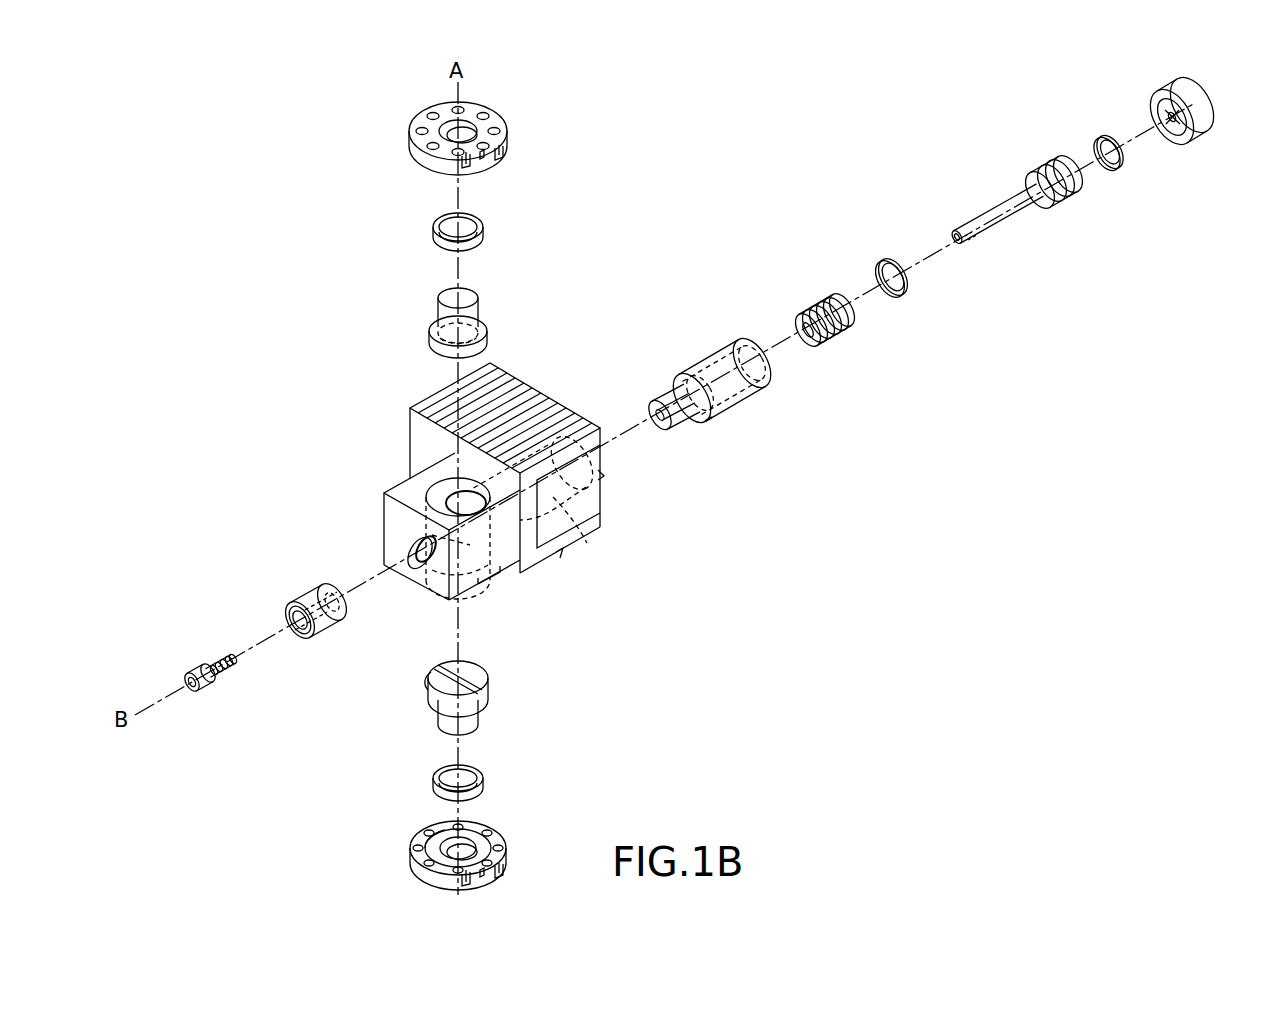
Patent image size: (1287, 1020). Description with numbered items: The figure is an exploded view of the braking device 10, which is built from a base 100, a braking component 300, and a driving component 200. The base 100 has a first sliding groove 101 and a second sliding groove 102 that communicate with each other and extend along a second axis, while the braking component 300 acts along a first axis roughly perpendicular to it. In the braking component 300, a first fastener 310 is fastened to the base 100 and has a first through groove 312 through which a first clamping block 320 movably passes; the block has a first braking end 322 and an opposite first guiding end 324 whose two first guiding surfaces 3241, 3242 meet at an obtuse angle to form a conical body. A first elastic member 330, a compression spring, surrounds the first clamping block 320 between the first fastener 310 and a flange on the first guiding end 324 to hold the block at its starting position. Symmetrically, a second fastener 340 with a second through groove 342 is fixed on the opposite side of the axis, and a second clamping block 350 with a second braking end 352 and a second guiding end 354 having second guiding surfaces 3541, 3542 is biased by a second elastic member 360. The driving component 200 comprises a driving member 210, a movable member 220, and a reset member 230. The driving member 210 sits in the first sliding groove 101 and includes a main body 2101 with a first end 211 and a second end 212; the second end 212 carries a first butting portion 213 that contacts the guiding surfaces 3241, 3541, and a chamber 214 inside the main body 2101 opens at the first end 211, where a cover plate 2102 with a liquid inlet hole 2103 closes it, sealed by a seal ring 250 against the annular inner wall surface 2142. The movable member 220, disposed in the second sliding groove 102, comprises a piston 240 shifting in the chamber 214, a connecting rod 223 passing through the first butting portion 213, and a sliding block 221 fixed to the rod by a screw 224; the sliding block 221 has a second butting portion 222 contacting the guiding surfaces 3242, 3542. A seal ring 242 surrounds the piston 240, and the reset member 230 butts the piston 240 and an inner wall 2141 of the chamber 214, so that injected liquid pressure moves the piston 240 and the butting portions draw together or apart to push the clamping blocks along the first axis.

The braking device 10 is at (356, 440).
The base 100 is at (560, 572).
The first sliding groove 101 is at (570, 530).
The second sliding groove 102 is at (415, 575).
The driving component 200 is at (888, 360).
The driving member 210 is at (727, 433).
The first end 211 is at (715, 340).
The second end 212 is at (660, 385).
The first butting portion 213 is at (680, 430).
The chamber 214 is at (760, 360).
The main body 2101 is at (715, 415).
The inner wall 2141 is at (735, 405).
The annular inner wall surface 2142 is at (700, 350).
The movable member 220 is at (332, 640).
The sliding block 221 is at (300, 598).
The second butting portion 222 is at (312, 597).
The connecting rod 223 is at (997, 223).
The screw 224 is at (188, 677).
The reset member 230 is at (835, 335).
The piston 240 is at (1070, 195).
The seal ring 242 is at (900, 293).
The seal ring 250 is at (1128, 165).
The cover plate 2102 is at (1207, 122).
The liquid inlet hole 2103 is at (1200, 100).
The braking component 300 is at (366, 127).
The first fastener 310 is at (508, 133).
The first through groove 312 is at (470, 128).
The first clamping block 320 is at (478, 306).
The first braking end 322 is at (438, 294).
The first guiding end 324 is at (482, 344).
The first guiding surface 3241 is at (488, 338).
The first guiding surface 3242 is at (428, 338).
The first elastic member 330 is at (432, 232).
The second fastener 340 is at (507, 852).
The second through groove 342 is at (420, 840).
The second clamping block 350 is at (478, 715).
The second braking end 352 is at (470, 730).
The second guiding end 354 is at (480, 694).
The second guiding surface 3541 is at (480, 672).
The second guiding surface 3542 is at (430, 683).
The second elastic member 360 is at (432, 776).